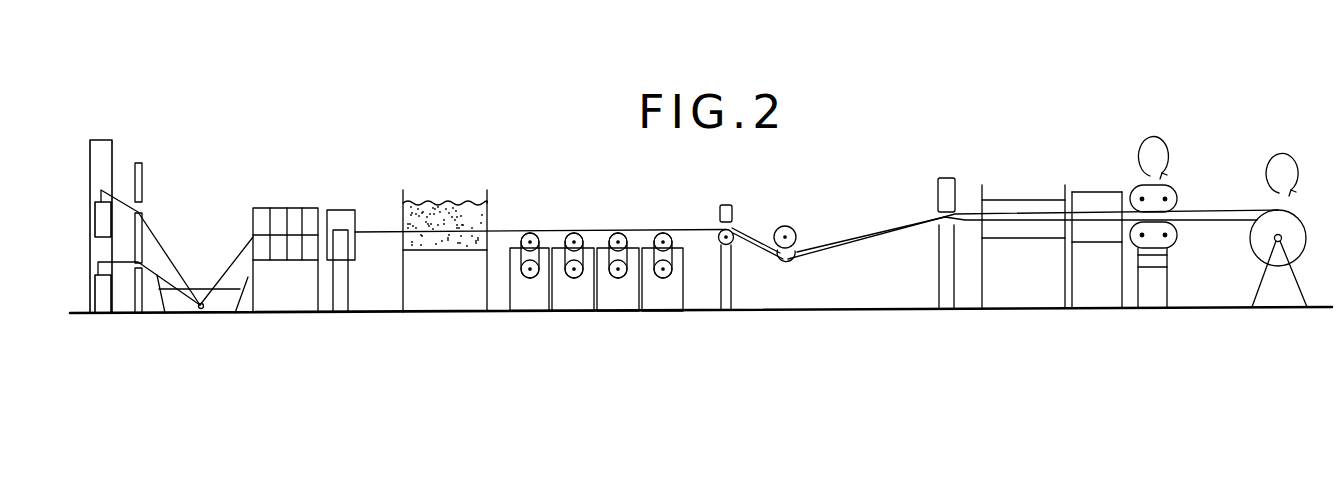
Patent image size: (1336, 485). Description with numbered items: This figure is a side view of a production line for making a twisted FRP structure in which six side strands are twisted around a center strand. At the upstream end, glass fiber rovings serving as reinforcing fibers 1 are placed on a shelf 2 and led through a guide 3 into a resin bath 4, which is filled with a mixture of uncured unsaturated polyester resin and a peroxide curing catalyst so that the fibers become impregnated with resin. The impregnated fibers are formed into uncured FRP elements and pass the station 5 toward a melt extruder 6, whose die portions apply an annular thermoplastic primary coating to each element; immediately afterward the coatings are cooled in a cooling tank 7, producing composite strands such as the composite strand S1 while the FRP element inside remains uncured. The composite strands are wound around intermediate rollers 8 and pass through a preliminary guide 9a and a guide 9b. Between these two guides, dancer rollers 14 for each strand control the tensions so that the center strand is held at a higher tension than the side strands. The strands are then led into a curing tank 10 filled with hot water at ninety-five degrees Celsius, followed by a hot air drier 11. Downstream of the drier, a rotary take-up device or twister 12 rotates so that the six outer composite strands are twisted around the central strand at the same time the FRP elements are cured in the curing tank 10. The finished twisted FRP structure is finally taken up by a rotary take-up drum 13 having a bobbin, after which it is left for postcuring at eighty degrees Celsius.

The reinforcing fibers 1 is at (101, 291).
The shelf 2 is at (122, 288).
The guide 3 is at (145, 297).
The resin bath 4 is at (243, 300).
The heating furnace 5 is at (315, 283).
The melt extruder 6 is at (340, 295).
The cooling tank 7 is at (447, 290).
The intermediate rollers 8 is at (663, 231).
The preliminary guide 9a is at (727, 203).
The dancer rollers 14 is at (785, 226).
The guide 9b is at (947, 178).
The curing tank 10 is at (1023, 280).
The hot air drier 11 is at (1097, 283).
The rotary take-up device or twister 12 is at (1153, 287).
The rotary take-up drum 13 is at (1282, 285).
The composite strand S1 is at (498, 230).